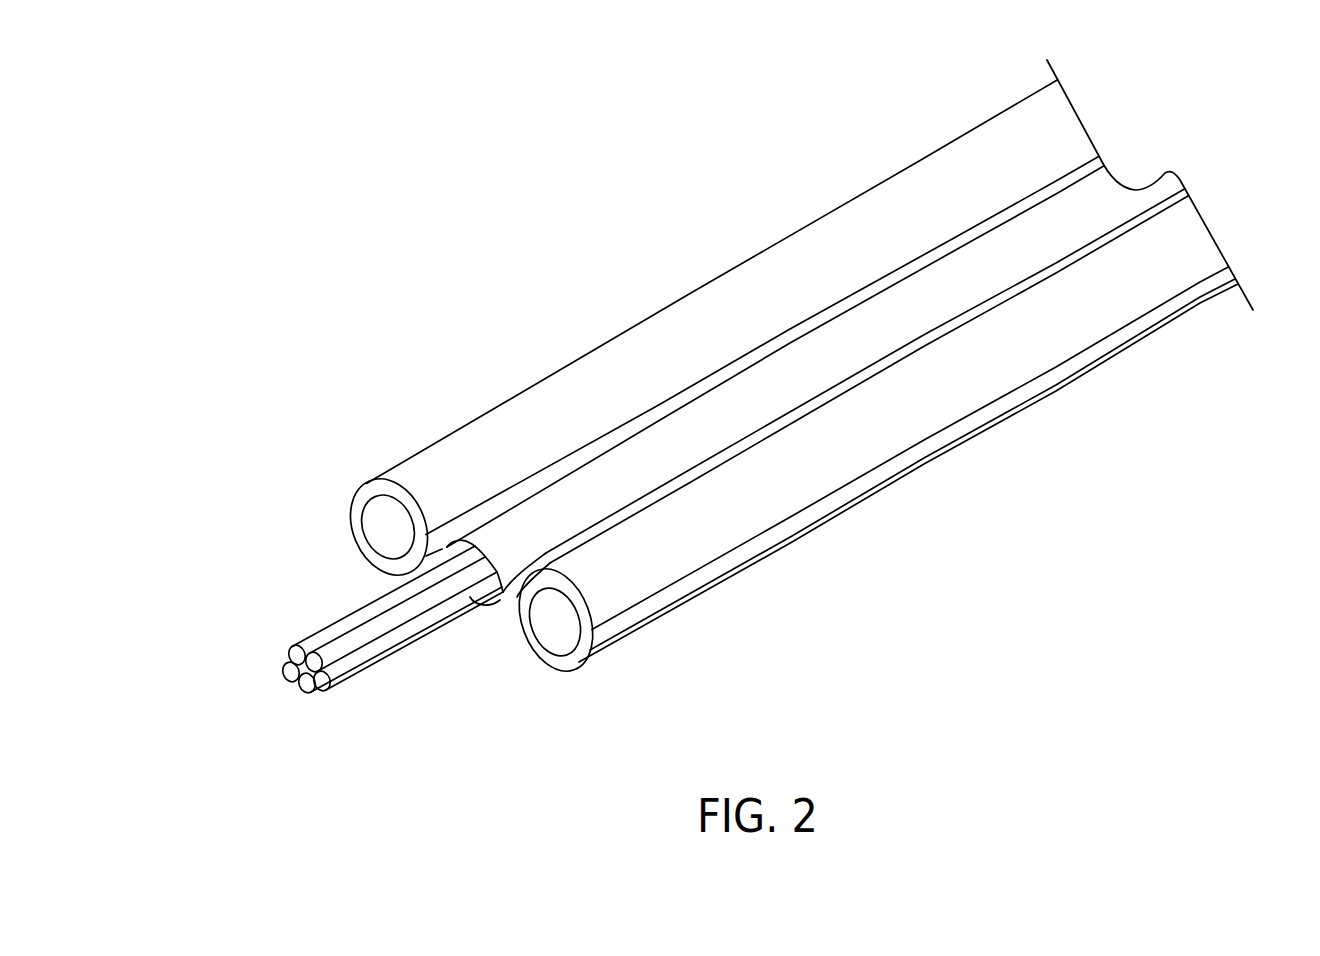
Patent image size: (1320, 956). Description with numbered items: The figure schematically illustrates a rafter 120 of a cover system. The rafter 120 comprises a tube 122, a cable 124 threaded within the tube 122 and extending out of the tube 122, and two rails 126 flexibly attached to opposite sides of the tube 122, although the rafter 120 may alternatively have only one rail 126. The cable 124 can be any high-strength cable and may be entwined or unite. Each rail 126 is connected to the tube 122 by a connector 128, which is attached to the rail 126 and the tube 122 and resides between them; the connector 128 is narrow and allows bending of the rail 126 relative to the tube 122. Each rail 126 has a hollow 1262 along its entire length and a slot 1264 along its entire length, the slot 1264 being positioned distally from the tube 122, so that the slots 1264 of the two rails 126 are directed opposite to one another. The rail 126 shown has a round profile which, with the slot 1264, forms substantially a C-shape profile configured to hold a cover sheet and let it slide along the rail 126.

The rafter 120 is at (701, 400).
The tube 122 is at (792, 375).
The cable 124 is at (287, 673).
The rail 126 is at (615, 352).
The connector 128 is at (930, 258).
The hollow 1262 is at (390, 537).
The slot 1264 is at (376, 502).